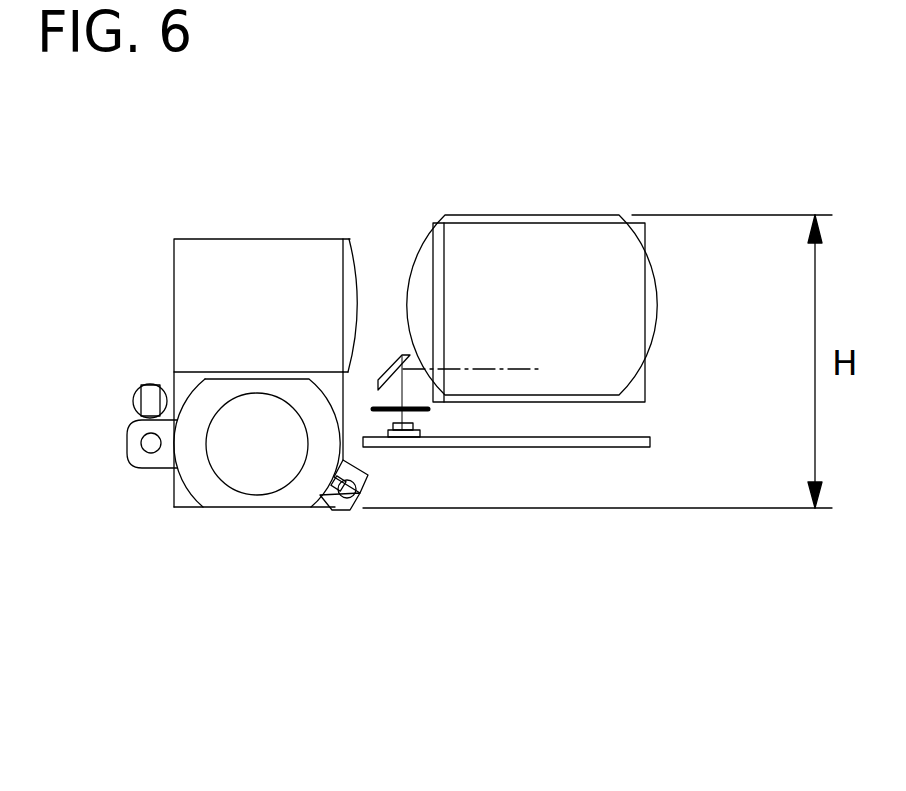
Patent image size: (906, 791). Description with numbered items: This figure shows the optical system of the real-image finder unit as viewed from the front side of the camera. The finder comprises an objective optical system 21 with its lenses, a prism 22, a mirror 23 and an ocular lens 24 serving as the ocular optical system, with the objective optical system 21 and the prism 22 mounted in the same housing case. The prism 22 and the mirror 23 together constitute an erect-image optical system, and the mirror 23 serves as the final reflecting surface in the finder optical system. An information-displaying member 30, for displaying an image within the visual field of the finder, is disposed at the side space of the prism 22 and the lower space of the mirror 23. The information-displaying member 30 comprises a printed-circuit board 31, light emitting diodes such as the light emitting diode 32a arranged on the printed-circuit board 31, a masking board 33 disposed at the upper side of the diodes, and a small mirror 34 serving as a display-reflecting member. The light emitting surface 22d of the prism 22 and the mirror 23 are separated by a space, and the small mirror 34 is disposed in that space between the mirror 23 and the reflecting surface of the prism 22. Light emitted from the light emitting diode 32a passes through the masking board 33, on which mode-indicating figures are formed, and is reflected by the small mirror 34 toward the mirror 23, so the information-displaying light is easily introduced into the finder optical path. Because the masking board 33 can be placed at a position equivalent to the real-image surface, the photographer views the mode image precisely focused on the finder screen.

The objective optical system 21 is at (200, 402).
The prism 22 is at (237, 253).
The light emitting surface 22d is at (358, 255).
The mirror 23 is at (625, 271).
The ocular lens 24 is at (542, 213).
The information-displaying member 30 is at (662, 431).
The printed-circuit board 31 is at (651, 445).
The light emitting diode 32a is at (403, 428).
The masking board 33 is at (422, 414).
The small mirror 34 is at (378, 391).